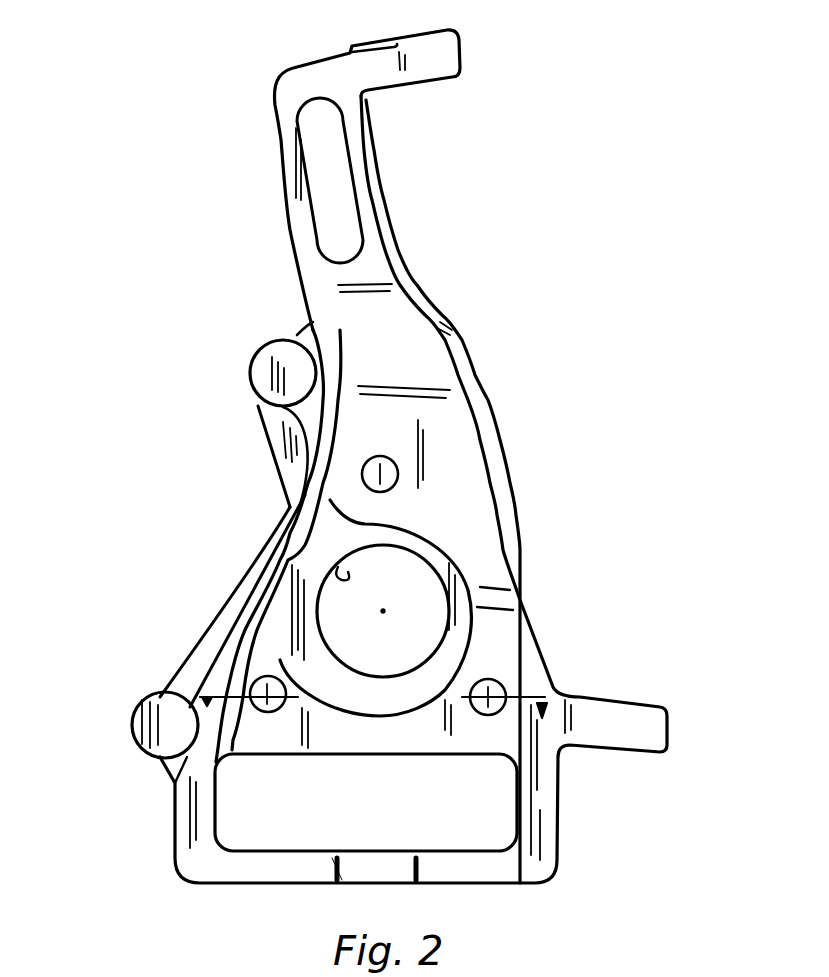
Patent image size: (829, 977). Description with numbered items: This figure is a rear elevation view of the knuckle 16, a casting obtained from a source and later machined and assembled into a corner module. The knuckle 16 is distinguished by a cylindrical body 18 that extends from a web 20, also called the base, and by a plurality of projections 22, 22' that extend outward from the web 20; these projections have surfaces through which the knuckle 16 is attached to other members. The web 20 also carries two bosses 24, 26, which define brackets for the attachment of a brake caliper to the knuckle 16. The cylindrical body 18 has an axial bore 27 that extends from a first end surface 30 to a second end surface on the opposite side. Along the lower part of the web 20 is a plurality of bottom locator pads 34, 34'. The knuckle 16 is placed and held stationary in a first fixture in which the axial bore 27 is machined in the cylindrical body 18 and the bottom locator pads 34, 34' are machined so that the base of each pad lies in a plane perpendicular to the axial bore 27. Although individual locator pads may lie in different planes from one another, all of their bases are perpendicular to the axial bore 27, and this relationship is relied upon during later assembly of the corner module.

The knuckle 16 is at (175, 578).
The cylindrical body 18 is at (448, 548).
The web 20 is at (463, 493).
The projection 22 is at (395, 168).
The projection 22' is at (652, 693).
The boss 24 is at (255, 372).
The boss 26 is at (137, 728).
The axial bore 27 is at (348, 572).
The first end surface 30 is at (463, 640).
The bottom locator pad 34 is at (461, 445).
The bottom locator pad 34' is at (555, 671).